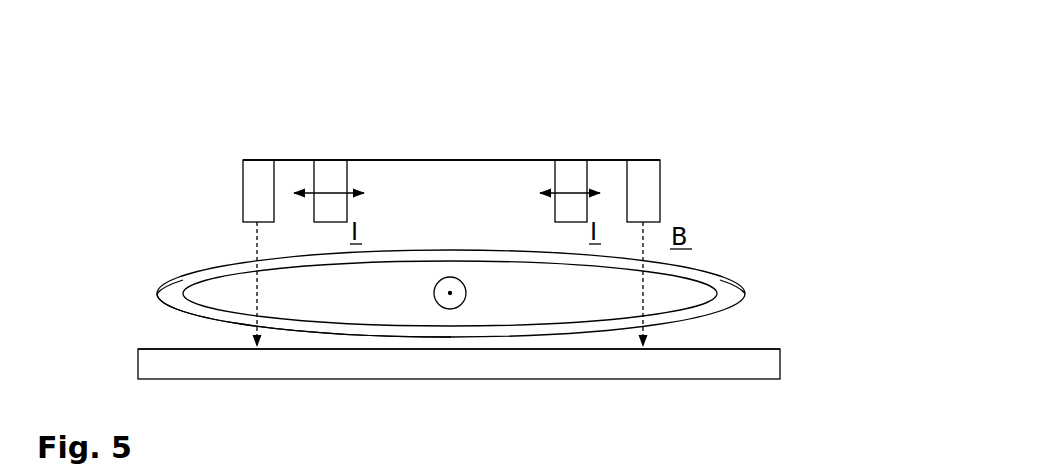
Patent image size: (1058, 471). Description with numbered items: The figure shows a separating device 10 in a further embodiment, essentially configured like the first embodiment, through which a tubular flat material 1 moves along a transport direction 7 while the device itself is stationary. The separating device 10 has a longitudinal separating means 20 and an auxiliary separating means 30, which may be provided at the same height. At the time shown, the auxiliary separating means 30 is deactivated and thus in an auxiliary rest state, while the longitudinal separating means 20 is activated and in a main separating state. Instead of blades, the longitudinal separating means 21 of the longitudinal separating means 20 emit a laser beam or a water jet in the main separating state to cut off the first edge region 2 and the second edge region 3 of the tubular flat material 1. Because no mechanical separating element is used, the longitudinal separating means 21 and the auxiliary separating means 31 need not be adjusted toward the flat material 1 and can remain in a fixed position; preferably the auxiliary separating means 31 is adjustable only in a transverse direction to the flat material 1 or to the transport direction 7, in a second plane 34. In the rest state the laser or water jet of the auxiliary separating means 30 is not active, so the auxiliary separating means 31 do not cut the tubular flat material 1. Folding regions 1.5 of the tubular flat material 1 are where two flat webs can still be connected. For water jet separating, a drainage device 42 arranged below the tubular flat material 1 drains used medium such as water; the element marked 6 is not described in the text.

The separating device 10 is at (225, 92).
The longitudinal separating means 20 is at (672, 163).
The auxiliary separating means 30 is at (590, 148).
The longitudinal separating means 21 is at (253, 187).
The auxiliary separating means 31 is at (336, 170).
The second plane 34 is at (552, 197).
The tubular flat material 1 is at (700, 275).
The first edge region 2 is at (737, 315).
The second edge region 3 is at (155, 317).
The folding region 1.5 is at (158, 293).
The transport direction 7 is at (456, 300).
The support surface 6 is at (375, 352).
The drainage device 42 is at (712, 372).